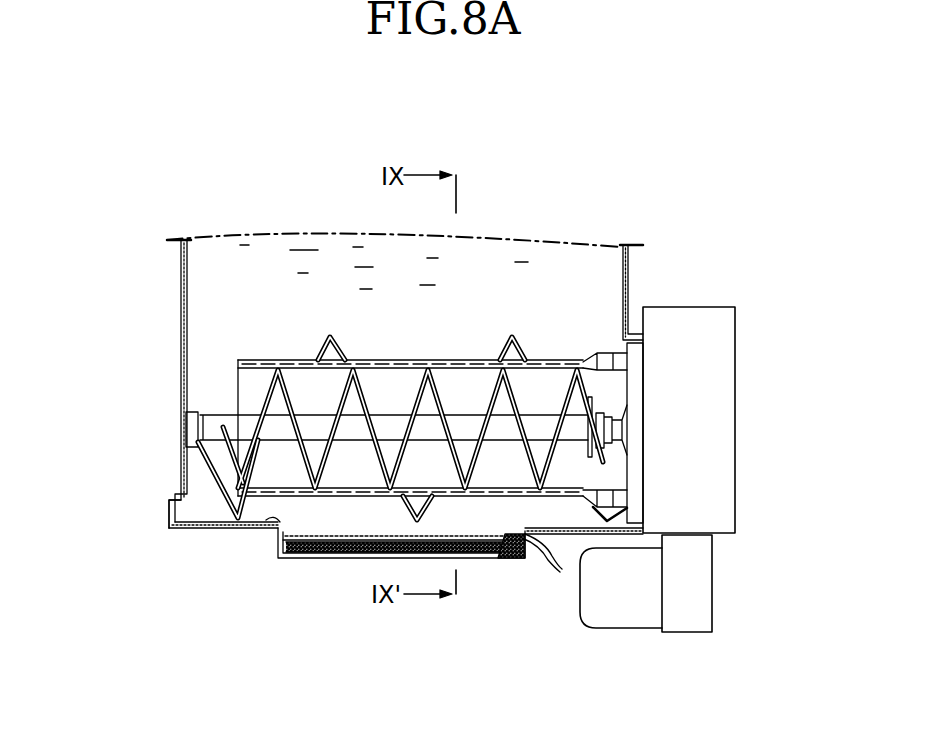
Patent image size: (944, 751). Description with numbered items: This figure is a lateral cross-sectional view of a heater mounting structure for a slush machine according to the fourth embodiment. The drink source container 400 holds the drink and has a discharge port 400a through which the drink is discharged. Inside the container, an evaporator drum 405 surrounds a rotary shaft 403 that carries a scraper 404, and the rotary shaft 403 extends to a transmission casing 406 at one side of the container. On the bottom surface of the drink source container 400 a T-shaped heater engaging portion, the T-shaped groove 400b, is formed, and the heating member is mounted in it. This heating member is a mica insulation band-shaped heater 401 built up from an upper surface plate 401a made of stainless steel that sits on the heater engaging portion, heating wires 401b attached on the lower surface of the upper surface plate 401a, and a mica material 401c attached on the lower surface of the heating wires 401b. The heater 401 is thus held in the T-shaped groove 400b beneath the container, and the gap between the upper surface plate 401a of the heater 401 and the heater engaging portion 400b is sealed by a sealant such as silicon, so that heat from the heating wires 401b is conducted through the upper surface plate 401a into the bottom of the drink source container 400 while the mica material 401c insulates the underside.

The drink source container 400 is at (158, 278).
The discharge port 400a is at (180, 514).
The T-shaped groove 400b is at (280, 524).
The mica insulation band-shaped heater 401 is at (293, 576).
The upper surface plate 401a is at (503, 558).
The heating wires 401b is at (360, 538).
The mica material 401c is at (462, 558).
The rotary shaft 403 is at (390, 427).
The scraper 404 is at (369, 392).
The evaporator drum 405 is at (250, 353).
The transmission casing 406 is at (688, 322).